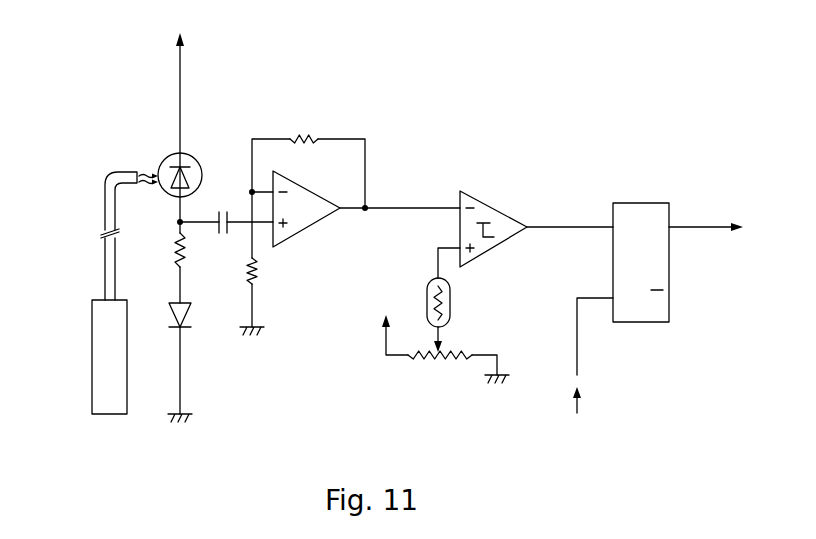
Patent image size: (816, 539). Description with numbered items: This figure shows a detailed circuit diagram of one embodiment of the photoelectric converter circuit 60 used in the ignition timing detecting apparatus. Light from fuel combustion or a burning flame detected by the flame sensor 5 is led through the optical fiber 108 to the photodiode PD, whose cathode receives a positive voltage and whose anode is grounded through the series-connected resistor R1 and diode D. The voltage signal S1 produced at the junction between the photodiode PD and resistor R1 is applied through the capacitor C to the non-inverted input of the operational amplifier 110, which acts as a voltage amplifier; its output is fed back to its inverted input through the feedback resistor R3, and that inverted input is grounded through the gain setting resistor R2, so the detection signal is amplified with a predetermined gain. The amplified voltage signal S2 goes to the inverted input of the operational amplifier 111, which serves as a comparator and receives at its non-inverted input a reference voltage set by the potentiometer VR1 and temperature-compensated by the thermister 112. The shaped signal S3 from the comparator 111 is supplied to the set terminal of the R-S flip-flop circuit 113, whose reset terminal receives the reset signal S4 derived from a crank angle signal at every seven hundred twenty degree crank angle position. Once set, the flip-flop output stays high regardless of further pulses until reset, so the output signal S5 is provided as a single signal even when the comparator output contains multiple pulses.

The photoelectric converter circuit 60 is at (378, 55).
The optical fiber 108 is at (105, 181).
The flame sensor 5 is at (92, 362).
The operational amplifier (voltage amplifier) 110 is at (315, 226).
The operational amplifier (comparator) 111 is at (499, 211).
The thermister 112 is at (452, 302).
The R-S flip-flop circuit 113 is at (662, 203).
The photodiode PD is at (189, 164).
The resistor R1 is at (166, 250).
The gain setting resistor R2 is at (267, 271).
The feedback resistor R3 is at (304, 128).
The capacitor C is at (225, 212).
The diode D is at (171, 316).
The potentiometer VR1 is at (440, 368).
The signal S1 is at (203, 226).
The amplified voltage signal S2 is at (418, 205).
The shaped signal S3 is at (572, 225).
The reset signal S4 is at (590, 298).
The output signal S5 is at (720, 225).